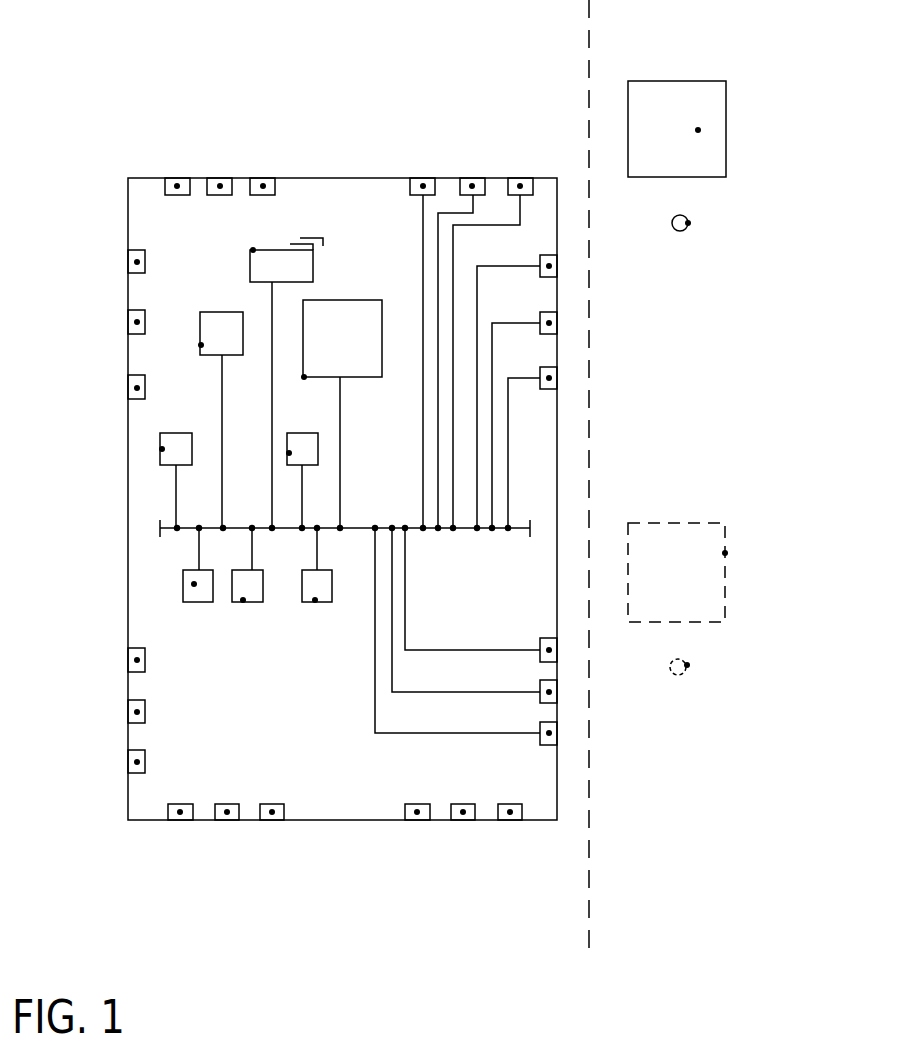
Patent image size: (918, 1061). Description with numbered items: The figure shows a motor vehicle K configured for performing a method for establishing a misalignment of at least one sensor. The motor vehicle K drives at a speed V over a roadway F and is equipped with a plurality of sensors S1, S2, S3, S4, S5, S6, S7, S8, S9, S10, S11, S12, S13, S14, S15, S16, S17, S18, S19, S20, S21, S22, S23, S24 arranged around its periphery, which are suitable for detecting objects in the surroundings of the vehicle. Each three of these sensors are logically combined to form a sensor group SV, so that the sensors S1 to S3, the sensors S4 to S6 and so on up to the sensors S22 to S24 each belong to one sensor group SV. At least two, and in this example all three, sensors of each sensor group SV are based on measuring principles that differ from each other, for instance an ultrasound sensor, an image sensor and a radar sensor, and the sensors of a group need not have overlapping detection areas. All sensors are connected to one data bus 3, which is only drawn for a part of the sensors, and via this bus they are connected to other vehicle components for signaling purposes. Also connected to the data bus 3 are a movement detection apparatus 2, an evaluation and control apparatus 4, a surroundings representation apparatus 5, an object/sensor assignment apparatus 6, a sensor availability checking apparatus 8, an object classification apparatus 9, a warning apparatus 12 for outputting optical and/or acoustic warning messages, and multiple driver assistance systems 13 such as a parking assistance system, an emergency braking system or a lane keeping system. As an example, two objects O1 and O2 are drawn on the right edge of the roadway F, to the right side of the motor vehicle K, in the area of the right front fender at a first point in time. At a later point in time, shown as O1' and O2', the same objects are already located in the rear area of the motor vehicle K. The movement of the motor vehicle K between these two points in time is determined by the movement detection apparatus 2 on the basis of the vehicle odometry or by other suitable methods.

The sensor S1 is at (177, 178).
The sensor S2 is at (220, 178).
The sensor S3 is at (264, 178).
The sensor S4 is at (422, 178).
The sensor S5 is at (475, 178).
The sensor S6 is at (523, 178).
The sensor S7 is at (552, 266).
The sensor S8 is at (552, 323).
The sensor S9 is at (552, 378).
The sensor S10 is at (552, 651).
The sensor S11 is at (552, 693).
The sensor S12 is at (552, 734).
The sensor S13 is at (510, 814).
The sensor S14 is at (463, 814).
The sensor S15 is at (417, 814).
The sensor S16 is at (272, 814).
The sensor S17 is at (227, 814).
The sensor S18 is at (180, 814).
The sensor S19 is at (135, 761).
The sensor S20 is at (135, 711).
The sensor S21 is at (135, 659).
The sensor S22 is at (135, 388).
The sensor S23 is at (135, 323).
The sensor S24 is at (135, 261).
The movement detection apparatus 2 is at (162, 449).
The data bus 3 is at (423, 514).
The evaluation and control apparatus 4 is at (304, 377).
The surroundings representation apparatus 5 is at (194, 584).
The object/sensor assignment apparatus 6 is at (243, 600).
The sensor availability checking apparatus 8 is at (315, 600).
The object classification apparatus 9 is at (201, 345).
The warning apparatus 12 is at (289, 453).
The driver assistance systems 13 is at (253, 250).
The object O1 is at (735, 129).
The object O2 is at (741, 228).
The object at later point in time O1' is at (737, 572).
The object at later point in time O2' is at (729, 657).
The sensor group SV is at (555, 92).
The motor vehicle K is at (90, 151).
The speed V is at (343, 35).
The roadway F is at (195, 14).